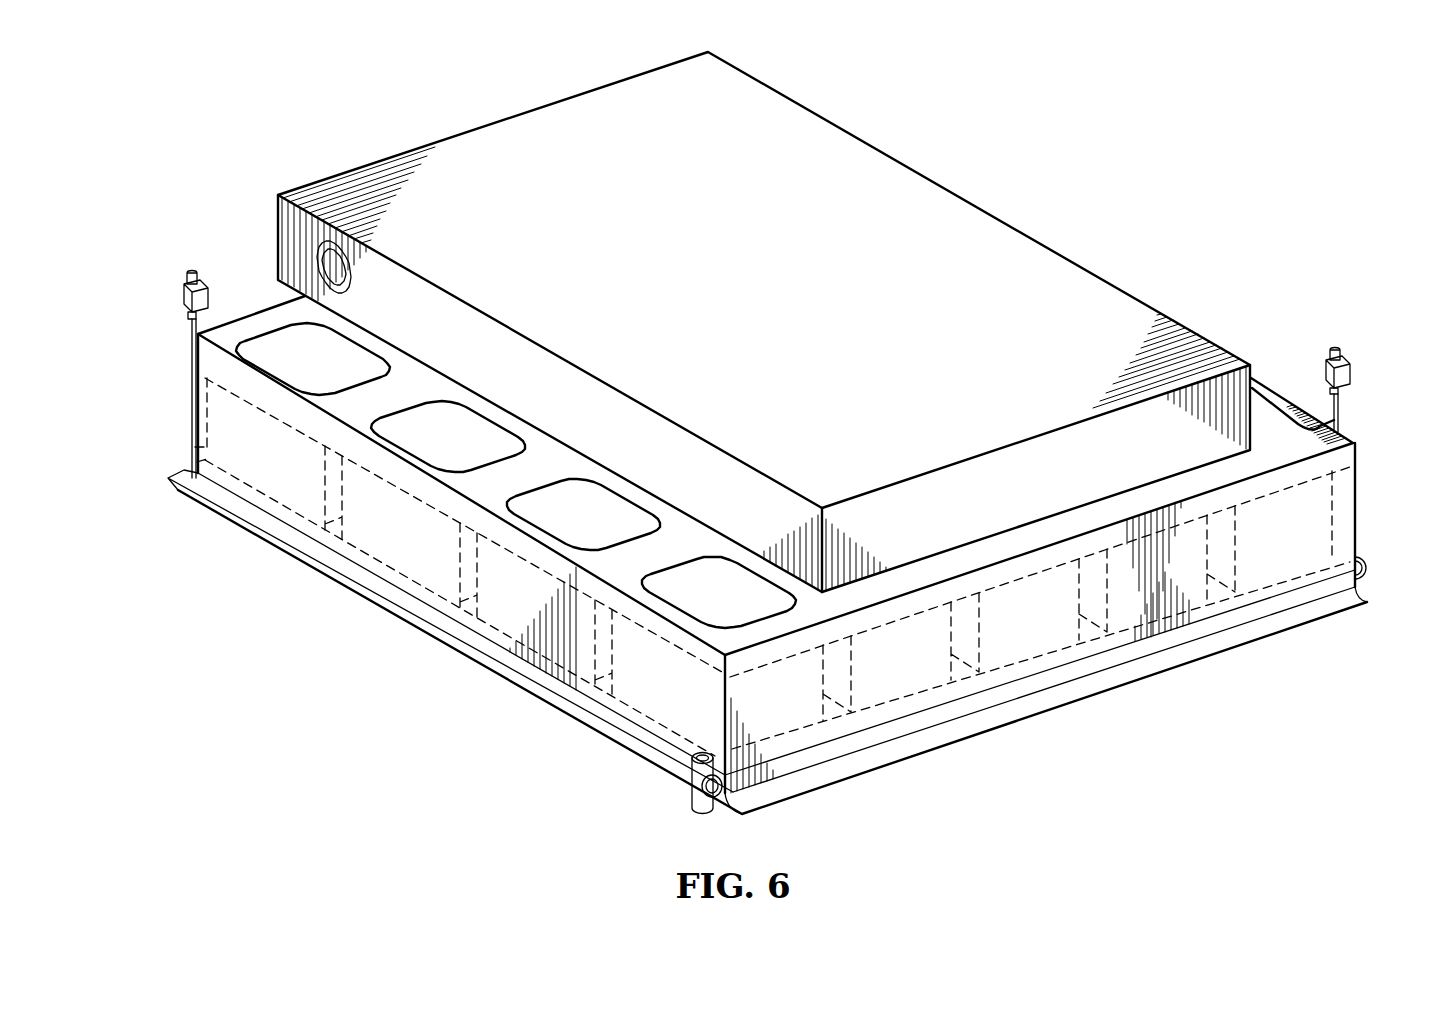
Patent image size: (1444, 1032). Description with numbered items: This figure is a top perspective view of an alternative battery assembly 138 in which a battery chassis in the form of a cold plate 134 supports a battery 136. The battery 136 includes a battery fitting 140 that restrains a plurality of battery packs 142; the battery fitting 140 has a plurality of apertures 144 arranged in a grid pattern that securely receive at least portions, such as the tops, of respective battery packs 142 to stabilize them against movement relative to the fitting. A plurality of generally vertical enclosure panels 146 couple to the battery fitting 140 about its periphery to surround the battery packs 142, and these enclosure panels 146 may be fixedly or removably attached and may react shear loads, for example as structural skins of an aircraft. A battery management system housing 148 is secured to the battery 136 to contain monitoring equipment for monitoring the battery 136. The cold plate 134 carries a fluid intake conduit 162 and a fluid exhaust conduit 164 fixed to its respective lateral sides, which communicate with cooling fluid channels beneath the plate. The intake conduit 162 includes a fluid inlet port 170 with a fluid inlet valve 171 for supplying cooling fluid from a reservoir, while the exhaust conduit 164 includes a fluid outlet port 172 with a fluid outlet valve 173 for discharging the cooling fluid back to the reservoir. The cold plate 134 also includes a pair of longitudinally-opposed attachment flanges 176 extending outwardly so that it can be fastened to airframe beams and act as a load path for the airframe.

The cold plate 134 is at (1237, 664).
The battery 136 is at (801, 535).
The battery assembly 138 is at (1163, 112).
The battery fitting 140 is at (1270, 400).
The battery packs 142 is at (273, 344).
The apertures 144 is at (365, 362).
The enclosure panels 146 is at (466, 563).
The battery management system housing 148 is at (988, 228).
The fluid intake conduit 162 is at (508, 683).
The fluid exhaust conduit 164 is at (1340, 412).
The fluid inlet port 170 is at (190, 262).
The fluid inlet valve 171 is at (153, 339).
The fluid outlet port 172 is at (1336, 342).
The fluid outlet valve 173 is at (1380, 354).
The attachment flanges 176 is at (918, 748).